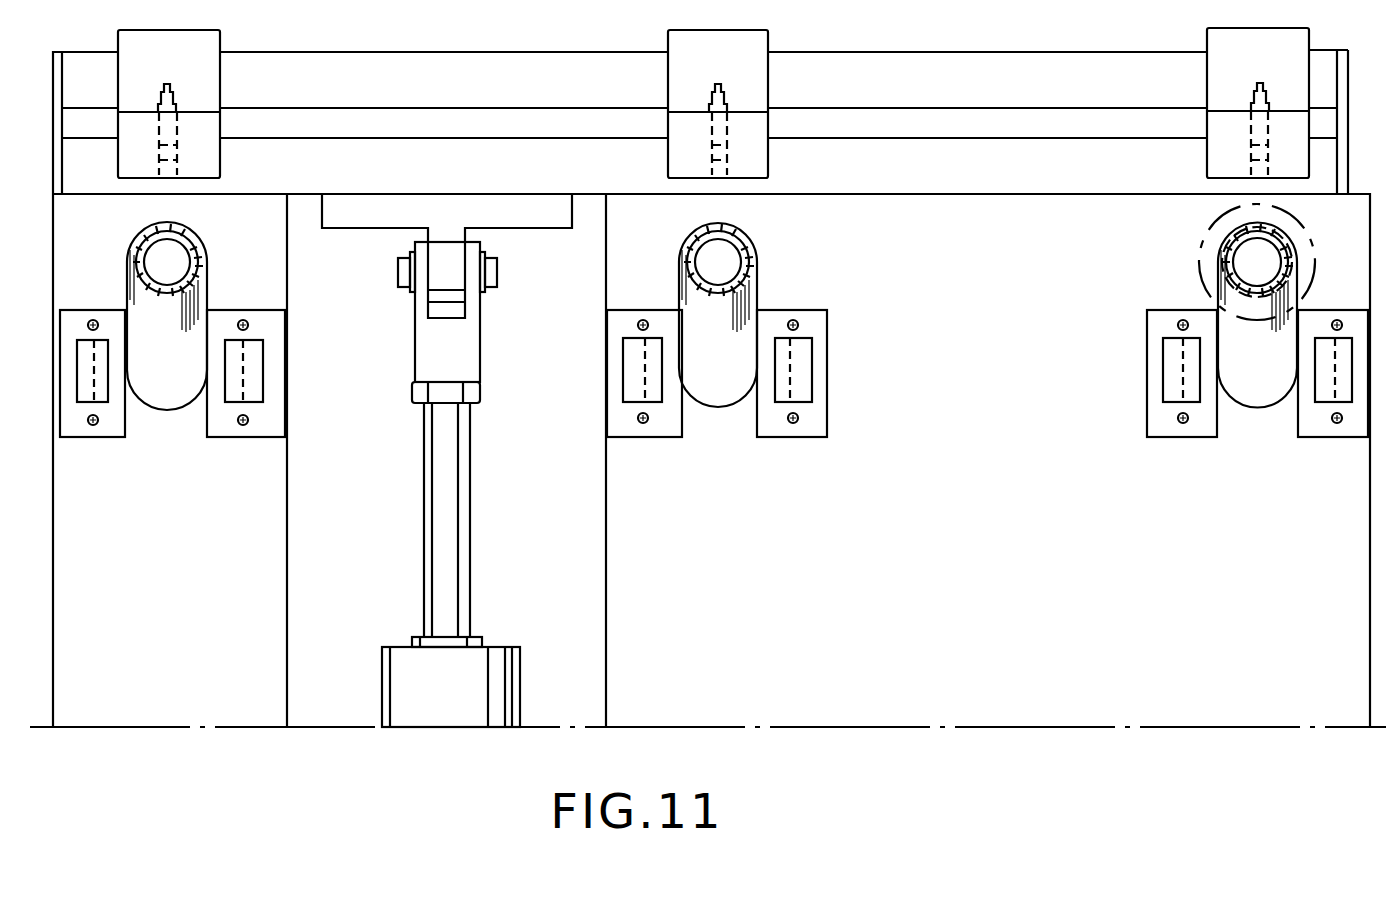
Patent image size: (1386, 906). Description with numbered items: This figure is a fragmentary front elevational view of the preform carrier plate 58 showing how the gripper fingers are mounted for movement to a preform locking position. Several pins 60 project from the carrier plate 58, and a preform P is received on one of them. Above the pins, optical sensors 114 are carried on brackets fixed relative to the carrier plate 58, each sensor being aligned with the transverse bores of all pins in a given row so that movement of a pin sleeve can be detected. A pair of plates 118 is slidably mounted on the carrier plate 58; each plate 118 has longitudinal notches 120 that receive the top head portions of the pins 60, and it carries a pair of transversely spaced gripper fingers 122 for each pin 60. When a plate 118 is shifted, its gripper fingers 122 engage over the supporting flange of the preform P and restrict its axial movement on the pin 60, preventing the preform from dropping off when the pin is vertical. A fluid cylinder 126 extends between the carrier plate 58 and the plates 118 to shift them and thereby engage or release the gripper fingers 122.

The carrier plate 58 is at (521, 190).
The pin 60 is at (194, 245).
The optical sensor 114 is at (178, 147).
The plate 118 is at (288, 555).
The longitudinal notch 120 is at (167, 409).
The gripper finger 122 is at (84, 400).
The fluid cylinder 126 is at (522, 647).
The preform P is at (1223, 240).